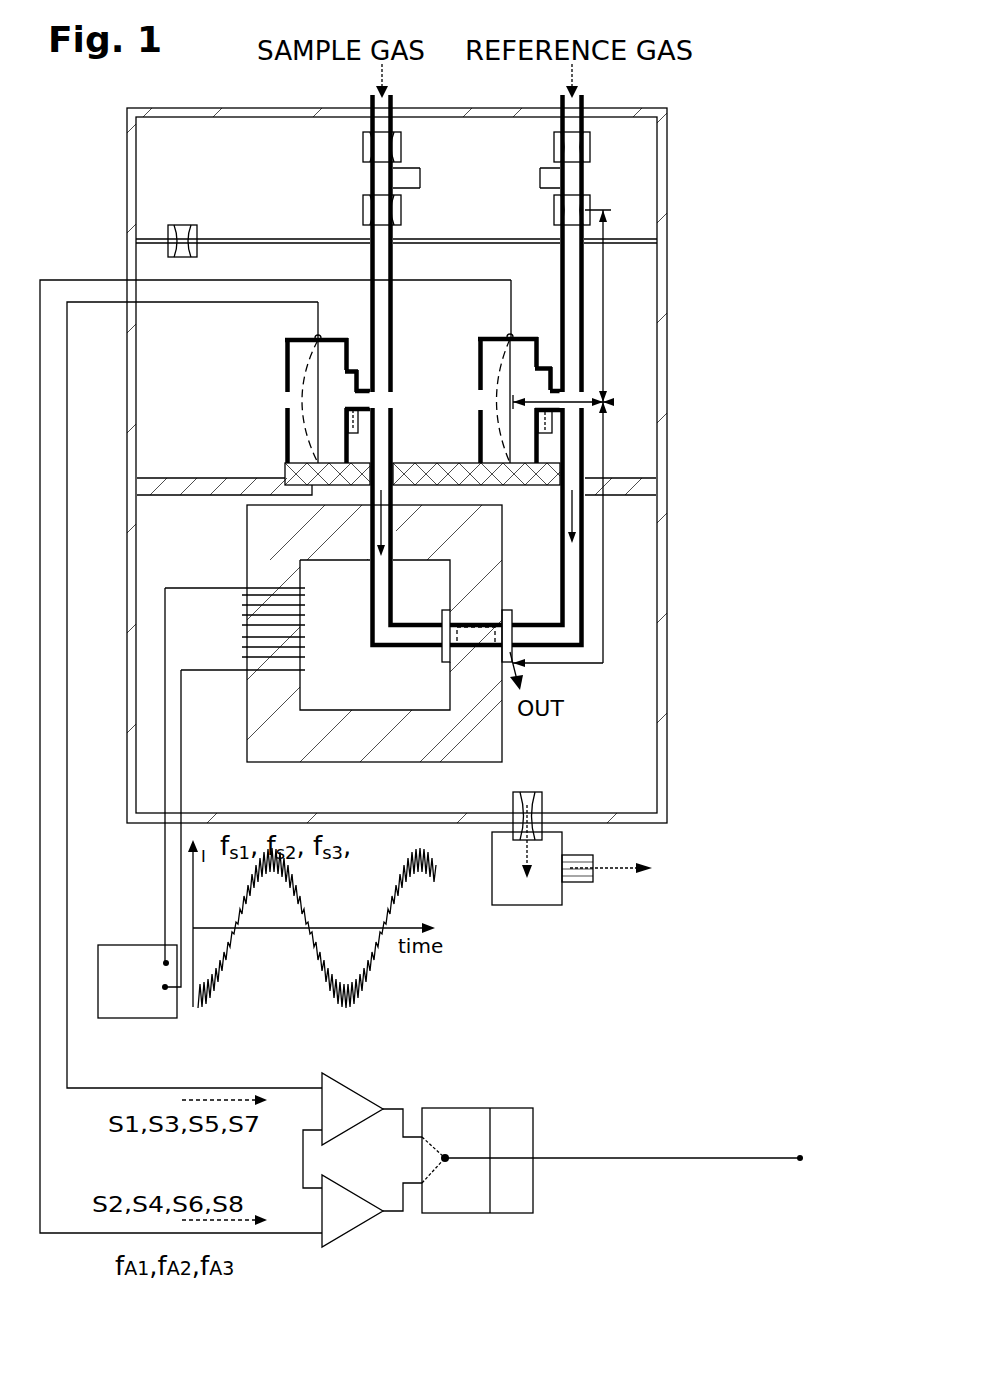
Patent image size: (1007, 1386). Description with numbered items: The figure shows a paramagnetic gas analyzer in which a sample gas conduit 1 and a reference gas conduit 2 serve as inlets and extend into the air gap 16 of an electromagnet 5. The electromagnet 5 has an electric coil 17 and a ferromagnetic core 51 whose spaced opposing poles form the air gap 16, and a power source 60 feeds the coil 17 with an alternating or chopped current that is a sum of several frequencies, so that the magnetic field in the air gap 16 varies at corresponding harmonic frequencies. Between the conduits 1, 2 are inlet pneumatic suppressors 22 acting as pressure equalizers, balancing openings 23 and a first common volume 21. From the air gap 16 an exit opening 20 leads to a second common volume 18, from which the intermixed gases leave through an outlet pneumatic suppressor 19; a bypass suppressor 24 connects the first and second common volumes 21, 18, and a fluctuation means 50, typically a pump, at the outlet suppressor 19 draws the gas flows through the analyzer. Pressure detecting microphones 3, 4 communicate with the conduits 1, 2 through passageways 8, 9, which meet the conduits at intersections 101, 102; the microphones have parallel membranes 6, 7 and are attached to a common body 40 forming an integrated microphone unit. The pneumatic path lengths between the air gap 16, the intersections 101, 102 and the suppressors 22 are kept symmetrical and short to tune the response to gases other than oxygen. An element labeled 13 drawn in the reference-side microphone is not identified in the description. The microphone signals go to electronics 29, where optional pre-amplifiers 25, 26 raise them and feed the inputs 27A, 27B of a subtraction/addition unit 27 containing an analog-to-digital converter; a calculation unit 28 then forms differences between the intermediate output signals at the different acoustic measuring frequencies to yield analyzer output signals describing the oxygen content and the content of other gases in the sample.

The sample gas conduit 1 is at (369, 103).
The reference gas conduit 2 is at (559, 103).
The pressure detecting microphone 3 is at (334, 391).
The pressure detecting microphone 4 is at (507, 377).
The electromagnet 5 is at (358, 635).
The membrane 6 is at (318, 380).
The membrane 7 is at (513, 370).
The passageway 8 is at (358, 434).
The passageway 9 is at (557, 390).
The second electrode 13 is at (561, 426).
The air gap 16 is at (493, 627).
The electric coil 17 is at (247, 672).
The second common volume 18 is at (625, 756).
The outlet pneumatic suppressor 19 is at (513, 808).
The exit opening 20 is at (470, 645).
The first common volume 21 is at (268, 203).
The inlet pneumatic suppressors 22 is at (363, 212).
The balancing openings 23 is at (540, 186).
The bypass suppressor 24 is at (183, 228).
The amplifier 25 is at (350, 1100).
The amplifier 26 is at (333, 1215).
The subtraction/addition unit 27 is at (438, 1121).
The input 27A is at (423, 1138).
The input 27B is at (423, 1183).
The calculation unit 28 is at (530, 1130).
The electronics 29 is at (536, 1121).
The common body 40 is at (513, 488).
The fluctuation means 50 is at (543, 901).
The core 51 is at (495, 746).
The power source 60 is at (146, 1004).
The intersection 101 is at (382, 402).
The intersection 102 is at (583, 400).